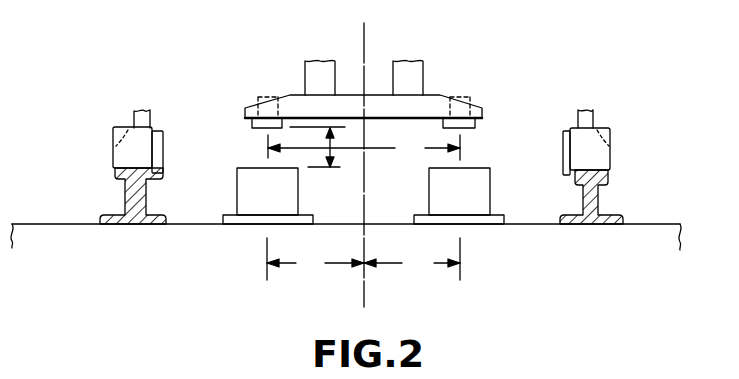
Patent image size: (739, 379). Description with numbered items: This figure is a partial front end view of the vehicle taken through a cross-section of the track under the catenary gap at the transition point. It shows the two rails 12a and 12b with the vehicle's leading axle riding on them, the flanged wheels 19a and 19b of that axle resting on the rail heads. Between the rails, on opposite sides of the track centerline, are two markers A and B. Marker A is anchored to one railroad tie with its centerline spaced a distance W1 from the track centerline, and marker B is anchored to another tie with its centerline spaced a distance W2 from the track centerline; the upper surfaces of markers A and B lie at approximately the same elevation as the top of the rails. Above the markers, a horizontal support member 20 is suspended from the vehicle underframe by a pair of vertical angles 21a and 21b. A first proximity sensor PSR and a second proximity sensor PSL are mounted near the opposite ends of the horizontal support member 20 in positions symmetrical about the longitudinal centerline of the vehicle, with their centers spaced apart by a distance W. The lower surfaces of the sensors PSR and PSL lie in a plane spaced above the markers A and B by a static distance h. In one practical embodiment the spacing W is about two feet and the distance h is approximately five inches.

The rail 12a is at (125, 190).
The rail 12b is at (605, 208).
The flanged wheel 19a is at (113, 141).
The flanged wheel 19b is at (612, 150).
The horizontal support member 20 is at (381, 95).
The vertical angle 21a is at (305, 67).
The vertical angle 21b is at (423, 74).
The first proximity sensor PSR is at (252, 127).
The second proximity sensor PSL is at (476, 131).
The marker A is at (237, 188).
The marker B is at (492, 190).
The static distance h is at (336, 164).
The sensor spacing distance W is at (364, 147).
The marker A offset distance W1 is at (315, 259).
The marker B offset distance W2 is at (412, 259).